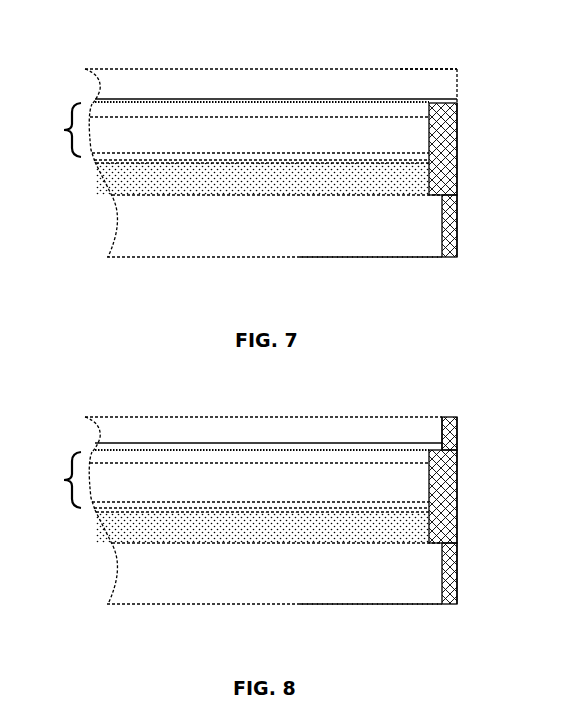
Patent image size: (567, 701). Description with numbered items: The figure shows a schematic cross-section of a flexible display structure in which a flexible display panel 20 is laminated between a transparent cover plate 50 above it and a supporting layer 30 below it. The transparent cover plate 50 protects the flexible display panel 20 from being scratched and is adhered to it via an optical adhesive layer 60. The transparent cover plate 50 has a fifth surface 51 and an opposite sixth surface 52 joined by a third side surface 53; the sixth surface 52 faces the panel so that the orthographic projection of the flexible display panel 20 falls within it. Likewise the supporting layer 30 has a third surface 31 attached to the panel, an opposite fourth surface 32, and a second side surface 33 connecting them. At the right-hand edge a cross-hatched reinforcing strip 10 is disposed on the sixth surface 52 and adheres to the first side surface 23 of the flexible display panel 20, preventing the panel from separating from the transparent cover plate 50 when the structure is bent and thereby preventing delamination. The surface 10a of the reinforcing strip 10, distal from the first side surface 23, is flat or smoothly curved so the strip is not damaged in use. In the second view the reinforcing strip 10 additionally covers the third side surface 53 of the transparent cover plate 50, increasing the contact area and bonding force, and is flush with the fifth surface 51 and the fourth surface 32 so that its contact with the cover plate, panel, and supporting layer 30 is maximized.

In FIG. 7, the reinforcing strip 10 is at (457, 178).
In FIG. 8, the reinforcing strip 10 is at (457, 527).
In FIG. 7, the surface of the reinforcing strip 10a is at (457, 132).
In FIG. 8, the surface of the reinforcing strip 10a is at (457, 480).
In FIG. 7, the flexible display panel 20 is at (232, 132).
In FIG. 8, the flexible display panel 20 is at (232, 481).
In FIG. 7, the first side surface 23 is at (443, 103).
In FIG. 8, the first side surface 23 is at (457, 440).
In FIG. 7, the supporting layer 30 is at (112, 246).
In FIG. 8, the supporting layer 30 is at (112, 593).
In FIG. 7, the third surface 31 is at (112, 197).
In FIG. 8, the third surface 31 is at (112, 545).
In FIG. 7, the fourth surface 32 is at (353, 258).
In FIG. 8, the fourth surface 32 is at (353, 605).
In FIG. 7, the second side surface 33 is at (443, 250).
In FIG. 8, the second side surface 33 is at (443, 598).
In FIG. 7, the transparent cover plate 50 is at (88, 80).
In FIG. 8, the transparent cover plate 50 is at (88, 426).
In FIG. 7, the fifth surface 51 is at (140, 68).
In FIG. 8, the fifth surface 51 is at (140, 416).
In FIG. 7, the sixth surface 52 is at (93, 97).
In FIG. 8, the sixth surface 52 is at (93, 441).
In FIG. 7, the third side surface 53 is at (457, 70).
In FIG. 8, the third side surface 53 is at (443, 420).
In FIG. 7, the optical adhesive layer 60 is at (232, 100).
In FIG. 8, the optical adhesive layer 60 is at (232, 447).